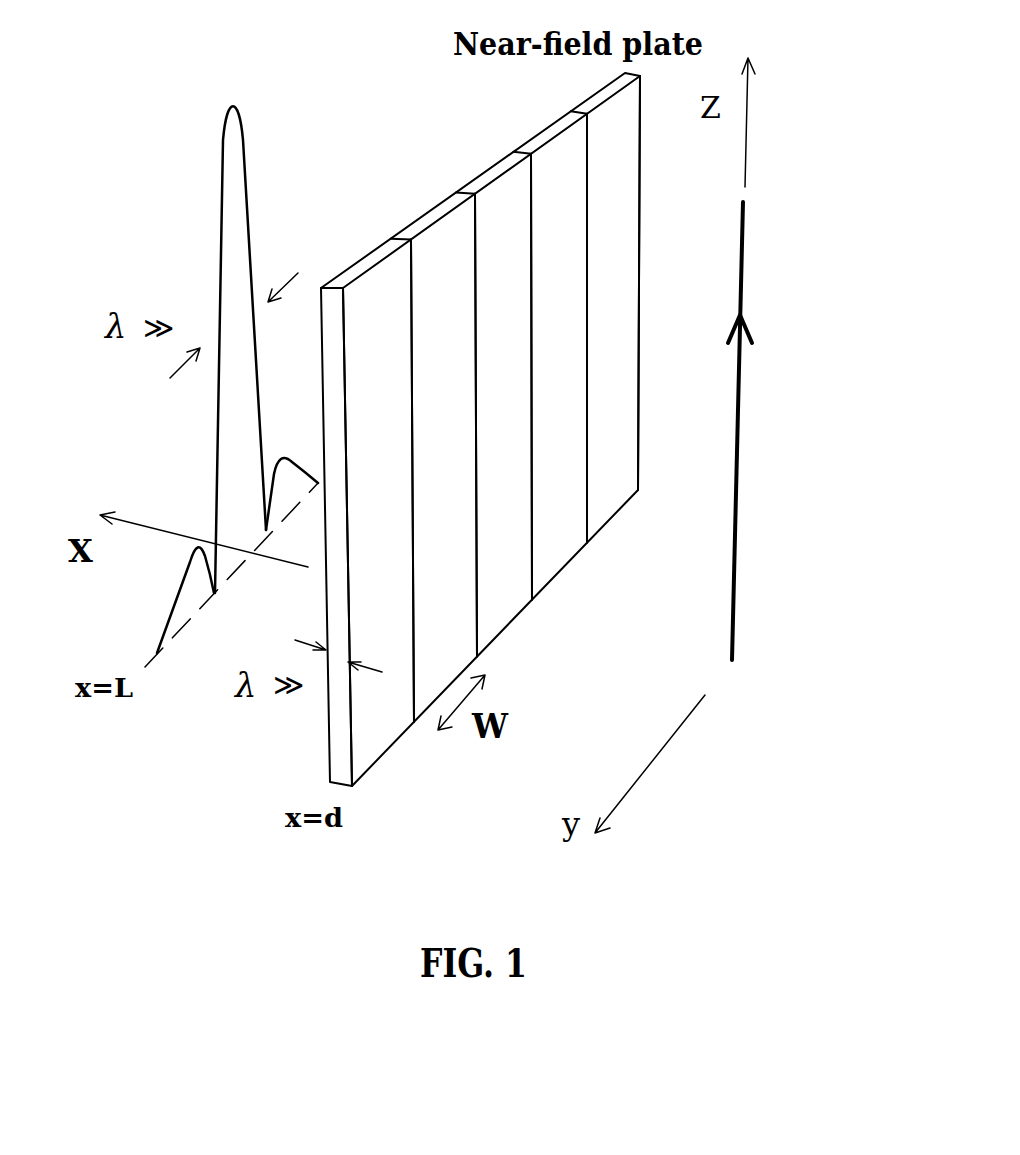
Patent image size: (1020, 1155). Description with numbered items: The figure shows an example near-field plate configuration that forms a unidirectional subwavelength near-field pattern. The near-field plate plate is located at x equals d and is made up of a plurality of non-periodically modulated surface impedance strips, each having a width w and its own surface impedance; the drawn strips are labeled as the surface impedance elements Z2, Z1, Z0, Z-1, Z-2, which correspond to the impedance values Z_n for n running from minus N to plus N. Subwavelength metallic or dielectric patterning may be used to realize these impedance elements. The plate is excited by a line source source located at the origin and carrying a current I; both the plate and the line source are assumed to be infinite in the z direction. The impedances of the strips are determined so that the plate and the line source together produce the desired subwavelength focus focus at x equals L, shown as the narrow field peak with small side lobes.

The near-field plate is at (480, 429).
The surface impedance element Z2 is at (378, 512).
The surface impedance element Z1 is at (444, 458).
The surface impedance element Z0 is at (503, 405).
The surface impedance element Z-1 is at (559, 357).
The surface impedance element Z-2 is at (613, 309).
The subwavelength focus is at (216, 379).
The line source is at (799, 431).